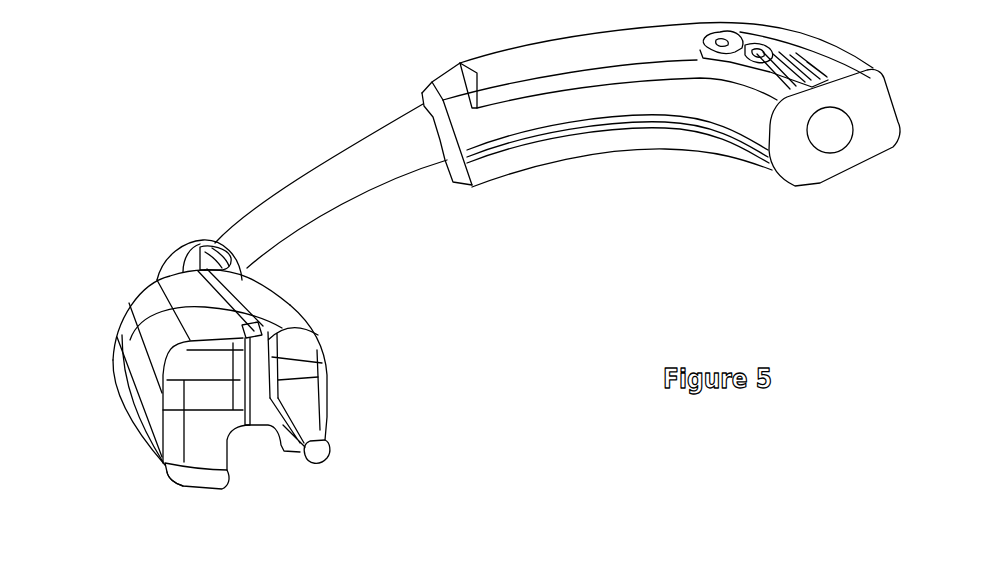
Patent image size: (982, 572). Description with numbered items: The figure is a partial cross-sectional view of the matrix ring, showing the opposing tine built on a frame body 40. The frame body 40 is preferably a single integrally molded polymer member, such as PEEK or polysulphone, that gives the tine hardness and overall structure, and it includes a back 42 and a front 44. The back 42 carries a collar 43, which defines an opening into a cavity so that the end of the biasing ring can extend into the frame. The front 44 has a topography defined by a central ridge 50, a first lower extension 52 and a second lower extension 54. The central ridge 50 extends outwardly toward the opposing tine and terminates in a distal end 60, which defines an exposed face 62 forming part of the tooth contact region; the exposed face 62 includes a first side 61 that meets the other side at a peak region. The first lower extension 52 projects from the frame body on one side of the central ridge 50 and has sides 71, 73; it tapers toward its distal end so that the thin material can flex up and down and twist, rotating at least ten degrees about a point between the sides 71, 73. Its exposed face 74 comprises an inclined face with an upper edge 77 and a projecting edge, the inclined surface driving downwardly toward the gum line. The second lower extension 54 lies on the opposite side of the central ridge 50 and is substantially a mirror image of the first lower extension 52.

The frame body 40 is at (281, 253).
The back 42 is at (158, 268).
The collar 43 is at (199, 240).
The front 44 is at (128, 333).
The central ridge 50 is at (246, 327).
The first lower extension 52 is at (137, 427).
The second lower extension 54 is at (317, 441).
The distal end 60 is at (250, 370).
The first side 61 is at (207, 388).
The exposed face 62 is at (258, 403).
The side 71 is at (148, 455).
The side 73 is at (181, 483).
The exposed face 74 is at (174, 479).
The upper edge 77 is at (213, 467).